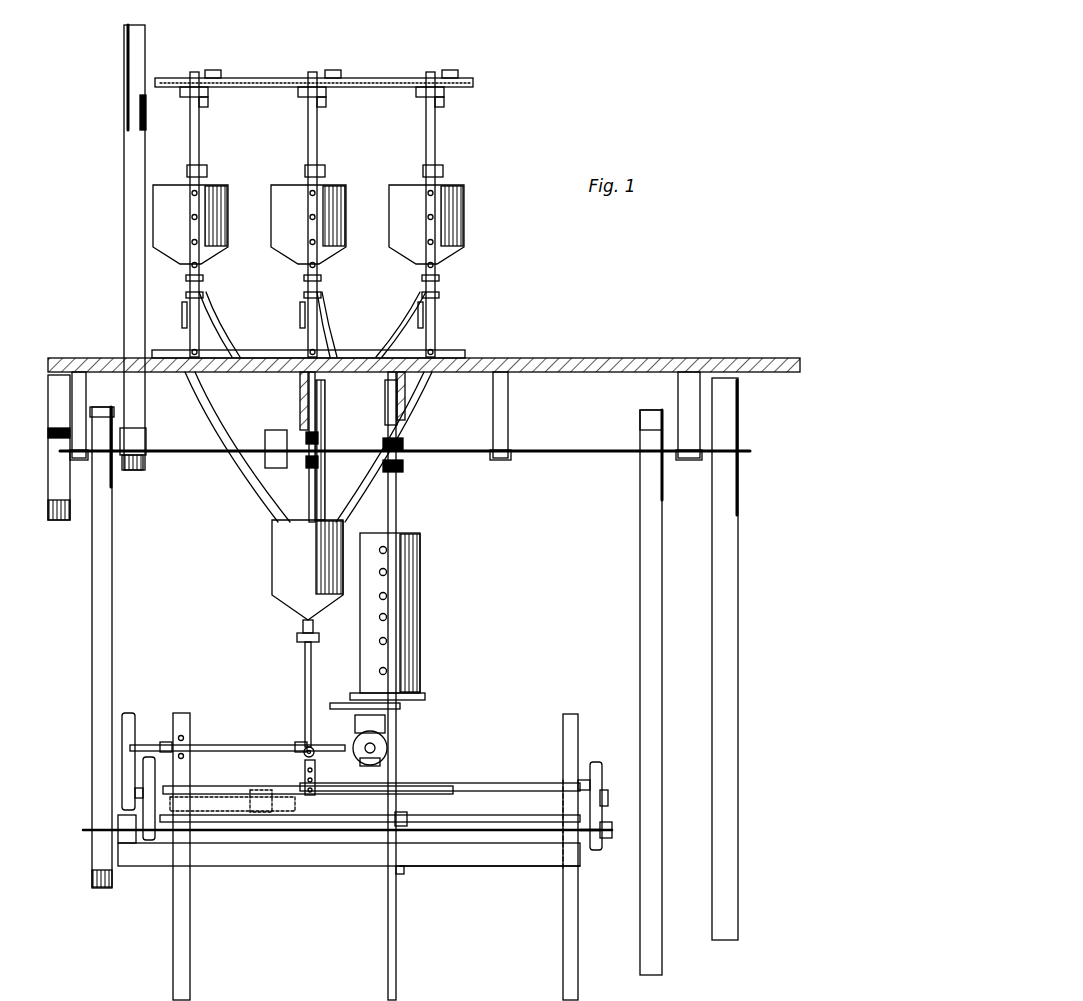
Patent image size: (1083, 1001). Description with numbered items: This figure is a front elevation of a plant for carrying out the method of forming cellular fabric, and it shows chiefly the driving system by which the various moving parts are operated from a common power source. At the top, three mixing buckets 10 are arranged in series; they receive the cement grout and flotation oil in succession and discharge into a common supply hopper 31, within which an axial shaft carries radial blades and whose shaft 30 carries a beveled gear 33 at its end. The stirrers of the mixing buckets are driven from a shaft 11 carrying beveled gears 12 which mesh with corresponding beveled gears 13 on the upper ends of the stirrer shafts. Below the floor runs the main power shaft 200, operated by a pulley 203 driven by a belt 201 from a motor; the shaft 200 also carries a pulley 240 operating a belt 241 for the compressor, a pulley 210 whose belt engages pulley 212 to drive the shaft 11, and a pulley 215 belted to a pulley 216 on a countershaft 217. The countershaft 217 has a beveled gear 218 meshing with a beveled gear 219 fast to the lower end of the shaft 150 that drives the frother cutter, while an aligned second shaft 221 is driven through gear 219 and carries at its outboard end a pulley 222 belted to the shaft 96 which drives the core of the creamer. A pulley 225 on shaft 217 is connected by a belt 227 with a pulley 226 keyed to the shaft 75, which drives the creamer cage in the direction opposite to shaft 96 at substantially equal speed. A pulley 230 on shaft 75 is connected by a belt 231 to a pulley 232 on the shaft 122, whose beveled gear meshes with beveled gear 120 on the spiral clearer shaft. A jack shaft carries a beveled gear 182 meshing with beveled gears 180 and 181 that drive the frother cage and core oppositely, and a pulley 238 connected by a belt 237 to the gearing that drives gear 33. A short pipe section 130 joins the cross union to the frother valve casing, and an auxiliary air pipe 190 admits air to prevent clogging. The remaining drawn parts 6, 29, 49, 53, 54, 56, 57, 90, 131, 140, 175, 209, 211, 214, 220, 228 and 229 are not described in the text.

The mixing bucket 10 is at (228, 216).
The shaft 11 is at (385, 78).
The beveled gear 12 is at (218, 70).
The beveled gear 13 is at (207, 97).
The clamp 29 is at (190, 312).
The shaft of the hopper 30 is at (214, 320).
The hopper 31 is at (272, 592).
The beveled gear 33 is at (306, 470).
The hanger 54 is at (300, 436).
The rod 49 is at (305, 703).
The collar 53 is at (298, 746).
The pivot 56 is at (313, 749).
The link 57 is at (316, 785).
The casing 6 is at (262, 790).
The shaft 75 is at (166, 788).
The bar 90 is at (405, 783).
The shaft 96 is at (598, 764).
The beveled gear 120 is at (385, 742).
The shaft 122 is at (240, 746).
The nipple or short pipe section 130 is at (400, 706).
The arm 131 is at (380, 762).
The cylinder 140 is at (421, 638).
The shaft 150 is at (502, 832).
The holes 175 is at (379, 620).
The beveled gear 180 is at (402, 440).
The beveled gear 181 is at (405, 464).
The beveled gear 182 is at (405, 422).
The auxiliary air pipe 190 is at (300, 800).
The main power shaft 200 is at (578, 453).
The belt 201 is at (640, 585).
The pulley 203 is at (640, 490).
The post 209 is at (72, 430).
The pulley 210 is at (146, 463).
The post 211 is at (124, 257).
The pulley 212 is at (146, 115).
The block 214 is at (114, 413).
The pulley 215 is at (113, 487).
The pulley 216 is at (95, 872).
The countershaft 217 is at (265, 843).
The beveled gear 218 is at (392, 868).
The beveled gear 219 is at (402, 812).
The beam 220 is at (455, 830).
The shaft 221 is at (540, 846).
The pulley 222 is at (606, 826).
The pulley 225 is at (152, 846).
The pulley 226 is at (165, 742).
The belt 227 is at (186, 740).
The hub 228 is at (604, 800).
The peg 229 is at (604, 778).
The pulley 230 is at (135, 793).
The belt 231 is at (143, 765).
The pulley 232 is at (122, 746).
The belt 237 is at (268, 475).
The pulley 238 is at (267, 455).
The pulley 240 is at (740, 480).
The belt 241 is at (740, 661).